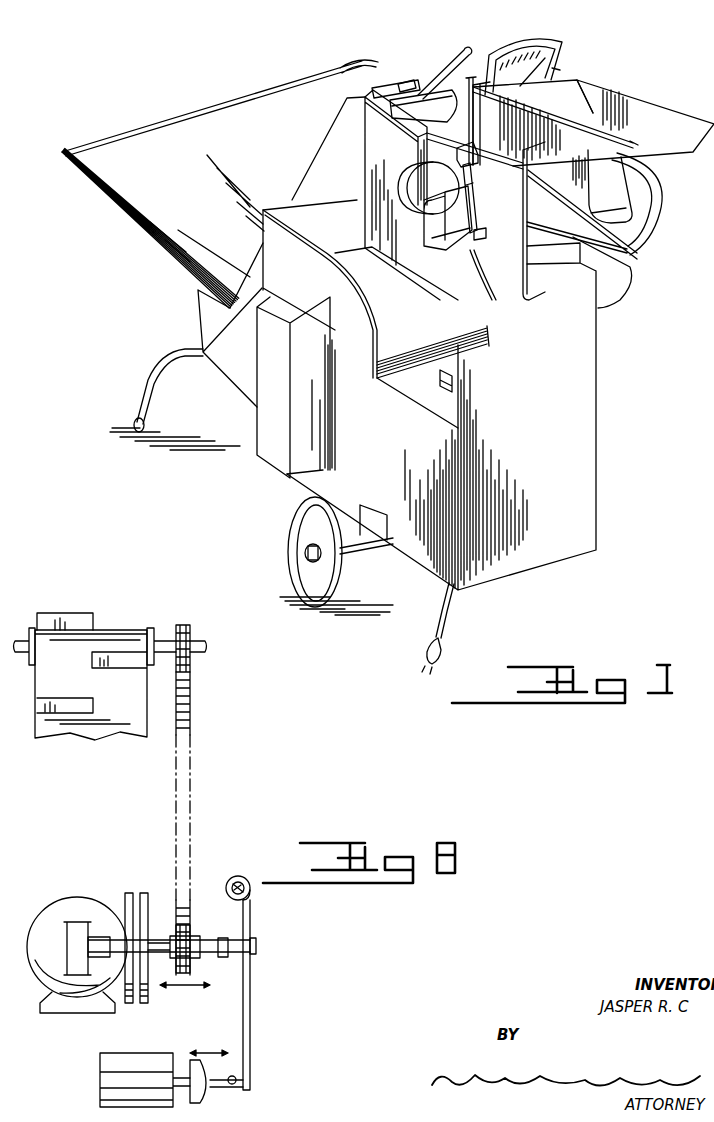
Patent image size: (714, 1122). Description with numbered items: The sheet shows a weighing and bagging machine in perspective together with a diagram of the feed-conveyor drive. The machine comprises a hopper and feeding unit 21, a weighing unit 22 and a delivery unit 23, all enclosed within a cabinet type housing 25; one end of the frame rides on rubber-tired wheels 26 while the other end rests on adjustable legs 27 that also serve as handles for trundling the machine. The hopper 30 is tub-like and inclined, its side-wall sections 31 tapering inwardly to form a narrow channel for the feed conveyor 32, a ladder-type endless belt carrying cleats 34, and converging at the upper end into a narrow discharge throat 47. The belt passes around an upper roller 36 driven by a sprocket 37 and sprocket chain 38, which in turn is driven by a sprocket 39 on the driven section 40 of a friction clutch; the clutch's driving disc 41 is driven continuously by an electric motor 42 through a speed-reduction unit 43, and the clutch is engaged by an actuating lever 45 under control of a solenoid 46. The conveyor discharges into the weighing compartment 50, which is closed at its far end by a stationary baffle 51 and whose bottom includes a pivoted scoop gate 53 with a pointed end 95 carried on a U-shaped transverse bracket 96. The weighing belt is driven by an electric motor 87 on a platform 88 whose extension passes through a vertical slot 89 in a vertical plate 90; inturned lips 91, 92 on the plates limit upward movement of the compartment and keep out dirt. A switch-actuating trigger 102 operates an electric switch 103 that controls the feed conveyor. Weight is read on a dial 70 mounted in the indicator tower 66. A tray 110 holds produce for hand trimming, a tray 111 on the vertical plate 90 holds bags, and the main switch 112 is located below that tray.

In FIG. 1, the hopper and feeding unit 21 is at (220, 233).
In FIG. 1, the weighing unit 22 is at (472, 73).
In FIG. 1, the delivery unit 23 is at (660, 195).
In FIG. 1, the cabinet type housing 25 is at (588, 400).
In FIG. 1, the rubber-tired wheels 26 is at (296, 519).
In FIG. 1, the legs 27 is at (140, 391).
In FIG. 1, the hopper 30 is at (240, 86).
In FIG. 1, the side-wall sections 31 is at (125, 185).
In FIG. 1, the feed conveyor 32 is at (405, 85).
In FIG. 8, the feed conveyor 32 is at (107, 632).
In FIG. 1, the cleats 34 is at (380, 80).
In FIG. 8, the cleats 34 is at (62, 618).
In FIG. 8, the upper roller 36 is at (154, 628).
In FIG. 8, the sprocket 37 is at (193, 628).
In FIG. 8, the sprocket chain 38 is at (190, 716).
In FIG. 8, the sprocket 39 is at (192, 925).
In FIG. 8, the driven section 40 is at (145, 893).
In FIG. 8, the driving disc 41 is at (128, 893).
In FIG. 8, the electric motor 42 is at (48, 912).
In FIG. 8, the speed-reduction unit 43 is at (78, 925).
In FIG. 8, the actuating lever 45 is at (251, 988).
In FIG. 8, the solenoid 46 is at (105, 1065).
In FIG. 1, the discharge throat 47 is at (420, 80).
In FIG. 1, the weighing compartment 50 is at (525, 125).
In FIG. 1, the baffle 51 is at (620, 165).
In FIG. 1, the scoop gate 53 is at (632, 228).
In FIG. 1, the indicator tower 66 is at (565, 66).
In FIG. 1, the dial 70 is at (562, 53).
In FIG. 1, the electric motor 87 is at (405, 168).
In FIG. 1, the platform 88 is at (465, 252).
In FIG. 1, the vertical slot 89 is at (478, 243).
In FIG. 1, the vertical plate 90 is at (366, 138).
In FIG. 1, the inturned lip 91 is at (410, 104).
In FIG. 1, the inturned lip 92 is at (572, 122).
In FIG. 1, the pointed end 95 is at (638, 256).
In FIG. 1, the transverse bracket 96 is at (488, 236).
In FIG. 1, the switch-actuating trigger 102 is at (470, 198).
In FIG. 1, the electric switch 103 is at (460, 155).
In FIG. 1, the tray 110 is at (640, 105).
In FIG. 1, the tray 111 is at (370, 358).
In FIG. 1, the main switch 112 is at (453, 386).